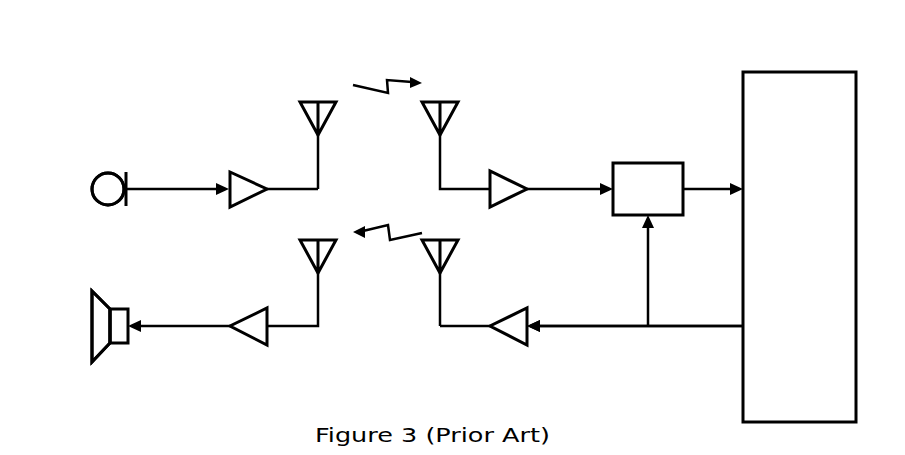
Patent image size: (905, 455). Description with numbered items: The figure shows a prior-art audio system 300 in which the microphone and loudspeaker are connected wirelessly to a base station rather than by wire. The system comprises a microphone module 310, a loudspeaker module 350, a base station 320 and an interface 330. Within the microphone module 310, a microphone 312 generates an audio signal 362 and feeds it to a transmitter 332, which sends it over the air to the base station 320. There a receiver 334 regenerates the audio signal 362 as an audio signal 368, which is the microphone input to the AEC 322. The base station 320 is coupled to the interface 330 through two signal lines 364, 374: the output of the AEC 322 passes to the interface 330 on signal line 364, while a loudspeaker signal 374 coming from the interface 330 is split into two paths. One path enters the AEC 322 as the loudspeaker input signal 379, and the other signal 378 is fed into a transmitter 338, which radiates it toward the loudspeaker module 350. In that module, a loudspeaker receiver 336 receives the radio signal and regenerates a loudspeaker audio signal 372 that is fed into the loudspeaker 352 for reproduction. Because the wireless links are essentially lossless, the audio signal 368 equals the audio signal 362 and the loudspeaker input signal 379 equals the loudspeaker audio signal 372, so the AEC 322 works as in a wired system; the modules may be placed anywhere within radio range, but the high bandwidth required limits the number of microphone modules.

The audio system 300 is at (108, 48).
The microphone module 310 is at (101, 146).
The microphone 312 is at (92, 181).
The base station 320 is at (587, 65).
The AEC 322 is at (667, 163).
The interface 330 is at (822, 72).
The transmitter 332 is at (311, 102).
The receiver 334 is at (441, 102).
The loudspeaker receiver 336 is at (330, 240).
The transmitter 338 is at (441, 240).
The loudspeaker module 350 is at (101, 274).
The loudspeaker 352 is at (92, 300).
The audio signal 362 is at (197, 186).
The signal line 364 is at (705, 186).
The audio signal 368 is at (580, 187).
The loudspeaker audio signal 372 is at (158, 323).
The loudspeaker signal 374 is at (690, 325).
The signal 378 is at (543, 325).
The loudspeaker input signal 379 is at (650, 278).